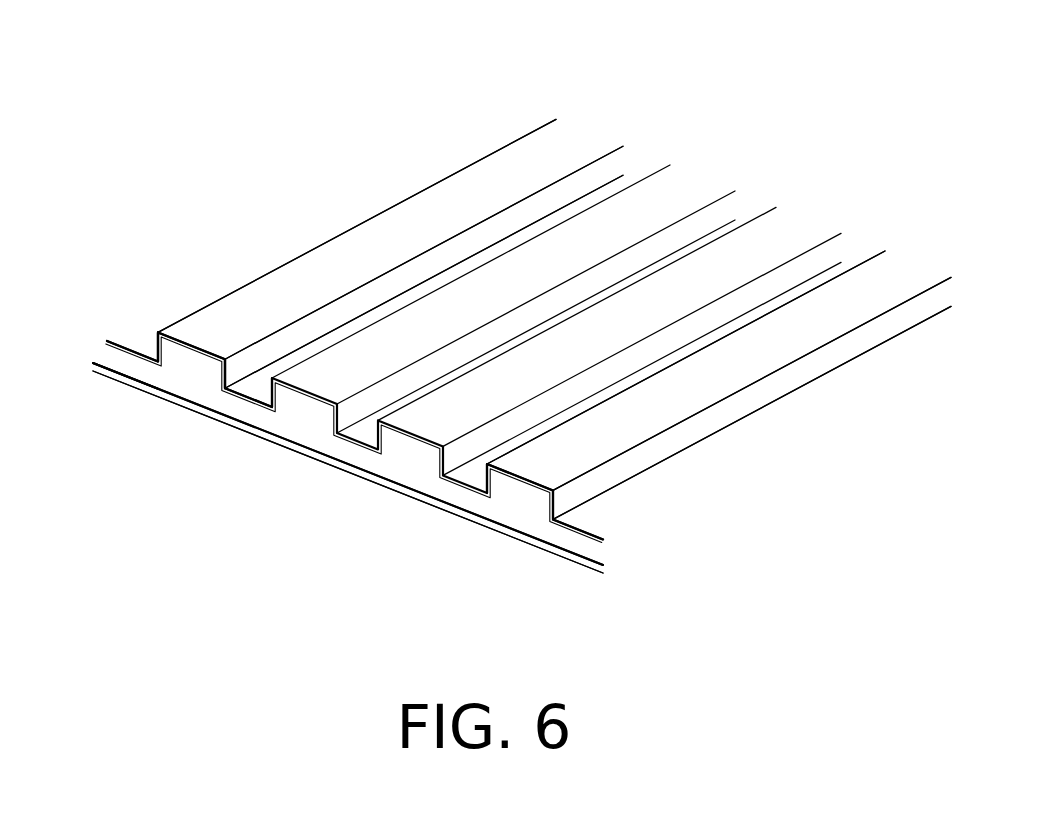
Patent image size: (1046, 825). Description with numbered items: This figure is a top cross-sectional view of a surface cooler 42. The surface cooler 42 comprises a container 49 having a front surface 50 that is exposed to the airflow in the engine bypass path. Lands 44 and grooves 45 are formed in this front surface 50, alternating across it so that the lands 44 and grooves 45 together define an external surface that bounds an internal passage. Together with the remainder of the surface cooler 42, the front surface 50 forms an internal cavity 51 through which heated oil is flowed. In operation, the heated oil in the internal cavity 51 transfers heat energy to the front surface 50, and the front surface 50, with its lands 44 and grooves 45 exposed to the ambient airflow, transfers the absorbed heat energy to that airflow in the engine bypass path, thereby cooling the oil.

The surface cooler 42 is at (385, 130).
The lands 44 is at (215, 323).
The grooves 45 is at (253, 382).
The container 49 is at (112, 388).
The front surface 50 is at (545, 465).
The internal cavity 51 is at (403, 455).